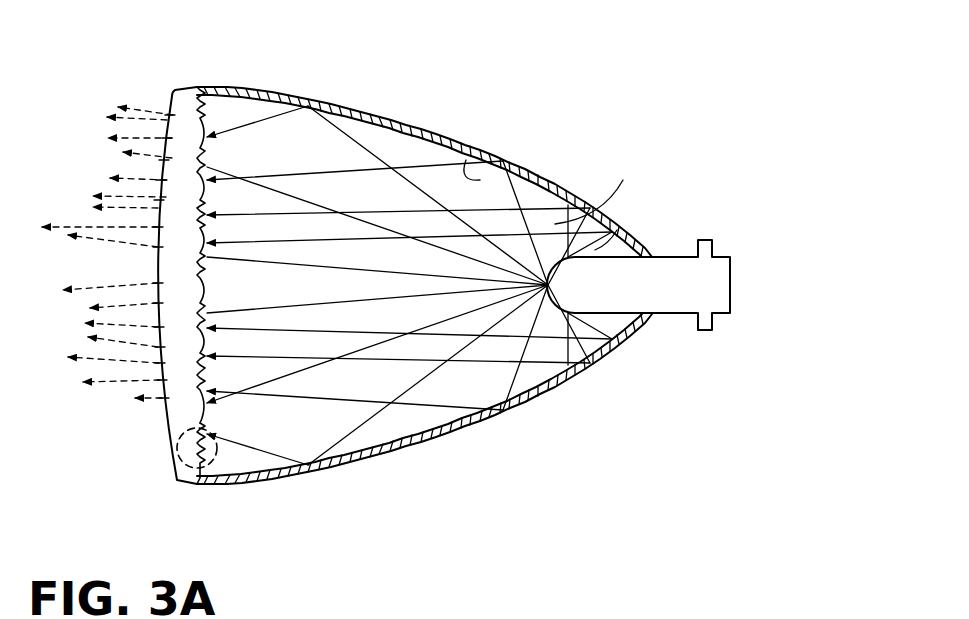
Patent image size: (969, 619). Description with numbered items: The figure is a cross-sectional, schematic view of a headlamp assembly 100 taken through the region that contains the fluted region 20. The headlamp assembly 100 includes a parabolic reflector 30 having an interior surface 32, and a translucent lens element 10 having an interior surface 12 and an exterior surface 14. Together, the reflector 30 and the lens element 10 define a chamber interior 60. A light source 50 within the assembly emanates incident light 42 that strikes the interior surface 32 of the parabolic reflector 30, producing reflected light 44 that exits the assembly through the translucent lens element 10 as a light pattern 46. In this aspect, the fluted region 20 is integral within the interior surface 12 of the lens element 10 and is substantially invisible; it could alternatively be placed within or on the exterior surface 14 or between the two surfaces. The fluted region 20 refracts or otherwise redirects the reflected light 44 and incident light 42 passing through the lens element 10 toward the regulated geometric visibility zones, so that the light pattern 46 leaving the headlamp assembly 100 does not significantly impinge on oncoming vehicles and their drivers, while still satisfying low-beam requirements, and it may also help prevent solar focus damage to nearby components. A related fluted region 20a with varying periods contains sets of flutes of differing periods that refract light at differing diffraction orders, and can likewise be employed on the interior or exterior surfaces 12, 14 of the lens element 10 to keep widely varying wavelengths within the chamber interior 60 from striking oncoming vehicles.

The headlamp assembly 100 is at (508, 100).
The translucent lens element 10 is at (182, 107).
The interior surface 12 is at (209, 121).
The exterior surface 14 is at (160, 427).
The fluted region 20 is at (213, 462).
The fluted region with varying periods 20a is at (177, 447).
The parabolic reflector 30 is at (360, 107).
The interior surface 32 is at (468, 159).
The incident light 42 is at (613, 248).
The reflected light 44 is at (363, 212).
The light pattern 46 is at (143, 110).
The light source 50 is at (662, 267).
The chamber interior 60 is at (287, 296).